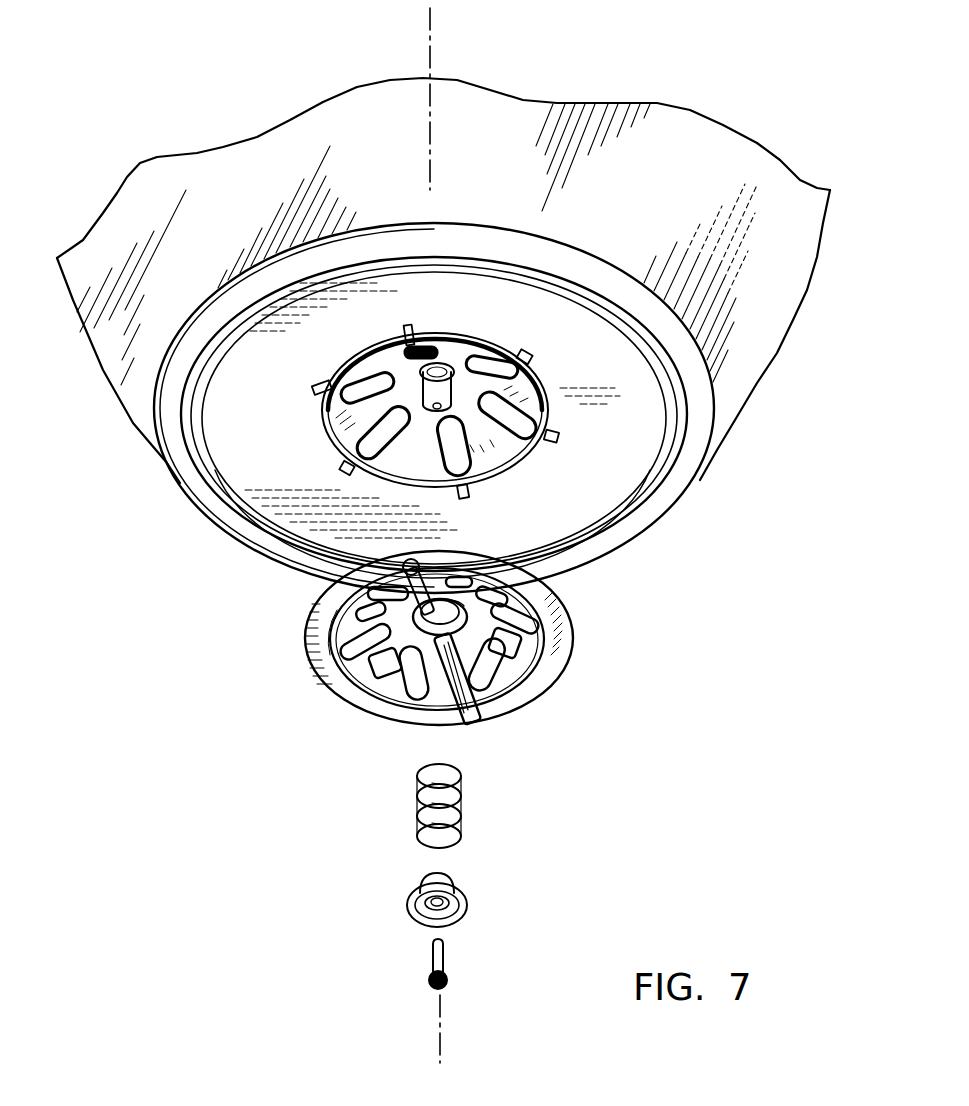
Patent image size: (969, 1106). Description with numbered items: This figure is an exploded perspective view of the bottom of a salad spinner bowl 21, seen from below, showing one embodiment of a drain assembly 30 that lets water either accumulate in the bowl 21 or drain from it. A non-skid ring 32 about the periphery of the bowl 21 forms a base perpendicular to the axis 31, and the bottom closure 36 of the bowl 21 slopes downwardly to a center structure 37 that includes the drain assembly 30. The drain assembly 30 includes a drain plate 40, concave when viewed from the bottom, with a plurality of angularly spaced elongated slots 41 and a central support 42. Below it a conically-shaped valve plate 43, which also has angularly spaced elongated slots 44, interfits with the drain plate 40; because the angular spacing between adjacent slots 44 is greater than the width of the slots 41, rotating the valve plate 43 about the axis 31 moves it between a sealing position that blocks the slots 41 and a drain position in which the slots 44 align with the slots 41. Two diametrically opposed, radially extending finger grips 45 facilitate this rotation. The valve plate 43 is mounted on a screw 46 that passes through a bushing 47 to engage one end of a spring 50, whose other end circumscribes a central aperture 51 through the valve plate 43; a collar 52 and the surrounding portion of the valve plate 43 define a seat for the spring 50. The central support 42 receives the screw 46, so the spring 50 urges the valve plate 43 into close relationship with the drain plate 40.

The bowl 21 is at (790, 312).
The drain assembly 30 is at (447, 671).
The axis 31 is at (432, 68).
The non-skid ring 32 is at (687, 442).
The bottom closure 36 is at (612, 402).
The center structure 37 is at (283, 653).
The drain plate 40 is at (327, 433).
The elongated slots 41 is at (372, 448).
The central support 42 is at (447, 402).
The valve plate 43 is at (553, 662).
The elongated slots 44 is at (500, 680).
The finger grips 45 is at (400, 618).
The screw 46 is at (447, 958).
The bushing 47 is at (420, 903).
The spring 50 is at (463, 800).
The central aperture 51 is at (417, 697).
The collar 52 is at (487, 617).